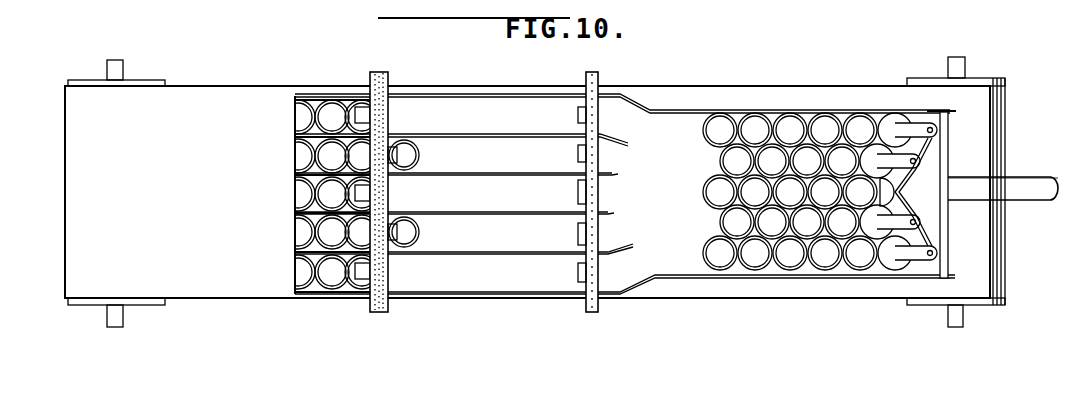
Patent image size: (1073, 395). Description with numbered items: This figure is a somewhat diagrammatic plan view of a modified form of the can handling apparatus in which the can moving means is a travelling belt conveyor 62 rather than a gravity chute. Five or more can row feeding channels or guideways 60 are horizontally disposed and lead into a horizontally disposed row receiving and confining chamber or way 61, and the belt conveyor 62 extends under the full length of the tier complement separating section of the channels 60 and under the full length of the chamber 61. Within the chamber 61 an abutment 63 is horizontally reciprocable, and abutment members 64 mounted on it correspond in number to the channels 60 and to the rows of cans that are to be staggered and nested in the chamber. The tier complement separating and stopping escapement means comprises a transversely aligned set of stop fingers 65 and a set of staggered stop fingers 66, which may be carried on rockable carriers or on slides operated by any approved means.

The can row feeding channels 60 is at (461, 148).
The row receiving and confining chamber 61 is at (727, 112).
The belt conveyor 62 is at (255, 293).
The abutment 63 is at (935, 165).
The abutment members 64 is at (910, 113).
The transversely aligned stop fingers 65 is at (576, 280).
The staggered stop fingers 66 is at (393, 145).